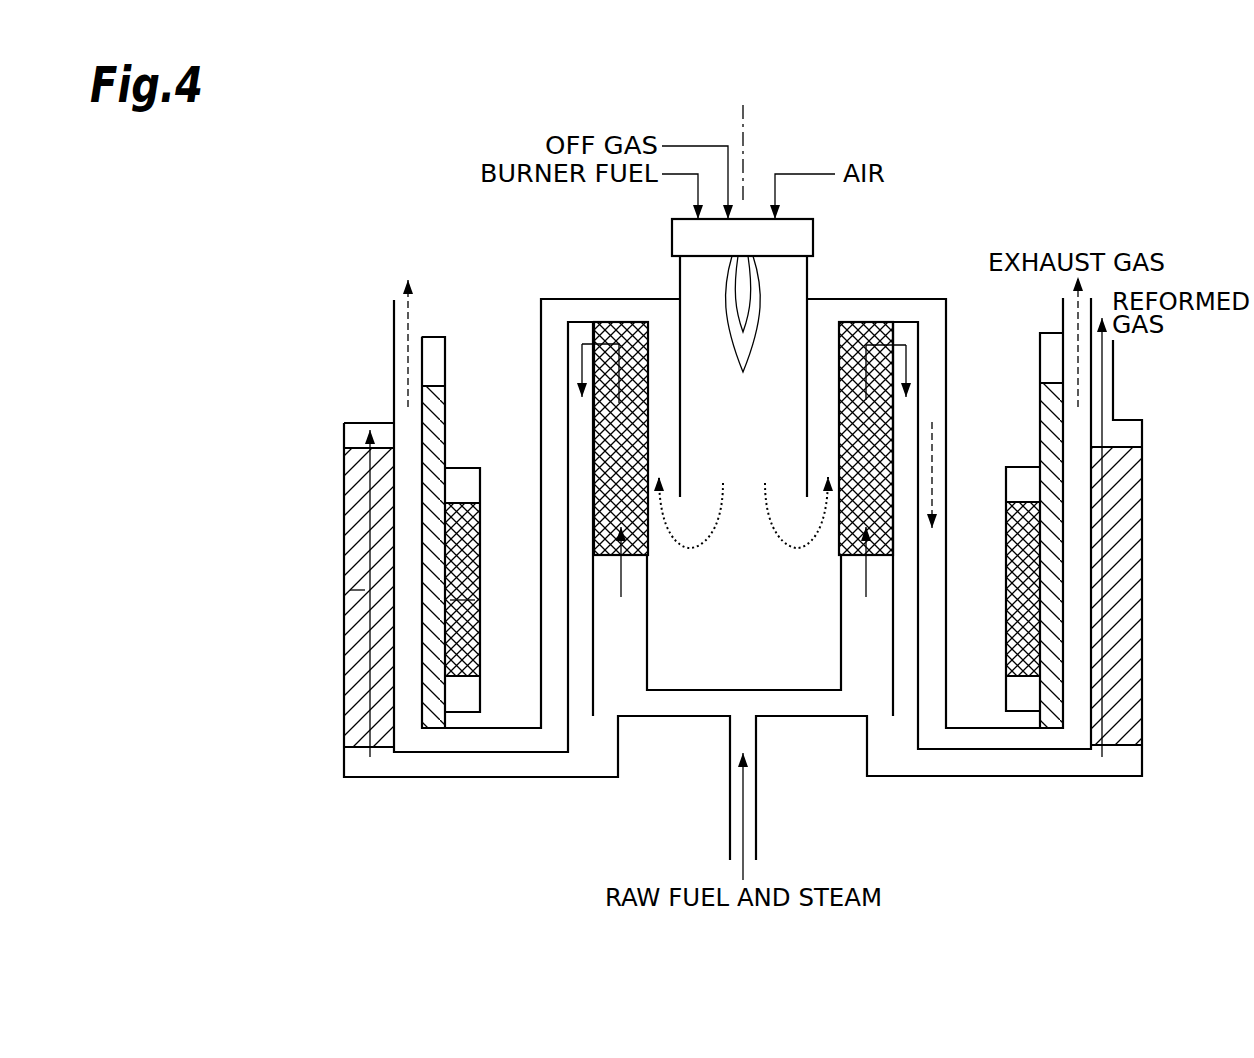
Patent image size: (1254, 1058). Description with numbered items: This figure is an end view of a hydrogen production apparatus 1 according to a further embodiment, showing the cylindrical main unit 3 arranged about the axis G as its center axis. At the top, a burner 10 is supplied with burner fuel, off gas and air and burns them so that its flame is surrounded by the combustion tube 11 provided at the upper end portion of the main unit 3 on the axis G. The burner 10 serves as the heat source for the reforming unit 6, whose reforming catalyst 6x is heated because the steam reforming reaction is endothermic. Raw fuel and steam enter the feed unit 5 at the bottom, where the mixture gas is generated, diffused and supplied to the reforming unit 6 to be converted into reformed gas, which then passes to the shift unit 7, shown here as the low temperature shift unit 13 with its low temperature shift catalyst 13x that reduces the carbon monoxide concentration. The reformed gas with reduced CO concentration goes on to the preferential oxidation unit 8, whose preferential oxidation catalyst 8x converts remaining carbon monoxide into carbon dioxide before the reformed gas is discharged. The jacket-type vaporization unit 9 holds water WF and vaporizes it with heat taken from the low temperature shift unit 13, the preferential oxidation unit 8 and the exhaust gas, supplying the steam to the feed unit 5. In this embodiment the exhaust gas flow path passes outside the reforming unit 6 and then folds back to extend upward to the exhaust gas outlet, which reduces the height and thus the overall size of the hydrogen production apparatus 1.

The hydrogen production apparatus 1 is at (1118, 178).
The main unit 3 is at (943, 272).
The feed unit 5 is at (759, 689).
The reforming unit 6 is at (651, 445).
The reforming catalyst 6x is at (865, 436).
The shift unit 7 is at (686, 537).
The preferential oxidation unit 8 is at (483, 520).
The preferential oxidation catalyst 8x is at (472, 633).
The vaporization unit 9 is at (448, 427).
The burner 10 is at (815, 238).
The combustion tube 11 is at (808, 281).
The low temperature shift unit 13 is at (344, 510).
The low temperature shift catalyst 13x is at (348, 595).
The water flow WF is at (431, 382).
The axis G is at (748, 120).